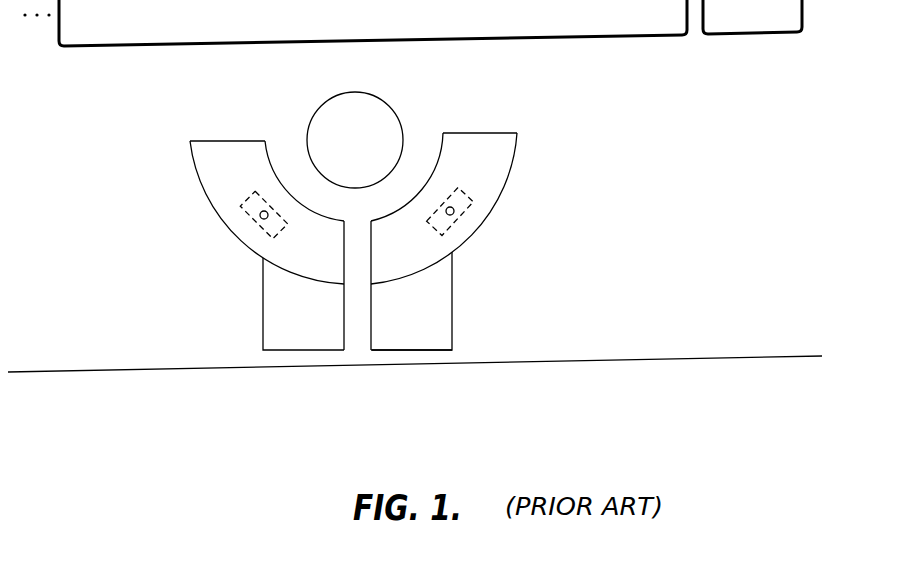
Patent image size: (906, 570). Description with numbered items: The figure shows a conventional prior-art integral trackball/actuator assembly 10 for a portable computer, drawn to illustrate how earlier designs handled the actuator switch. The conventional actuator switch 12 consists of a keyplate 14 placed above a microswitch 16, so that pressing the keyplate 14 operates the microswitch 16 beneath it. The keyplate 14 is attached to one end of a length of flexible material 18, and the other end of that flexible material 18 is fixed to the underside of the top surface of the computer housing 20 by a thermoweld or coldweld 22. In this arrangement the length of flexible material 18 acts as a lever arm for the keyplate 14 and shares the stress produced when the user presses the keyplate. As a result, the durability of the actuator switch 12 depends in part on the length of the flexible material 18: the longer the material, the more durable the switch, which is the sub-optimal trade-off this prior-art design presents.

The integral trackball/actuator assembly 10 is at (363, 242).
The actuator switch 12 is at (383, 208).
The keyplate 14 is at (492, 172).
The microswitch 16 is at (462, 213).
The length of flexible material 18 is at (440, 315).
The computer housing 20 is at (664, 344).
The thermoweld or coldweld 22 is at (410, 349).